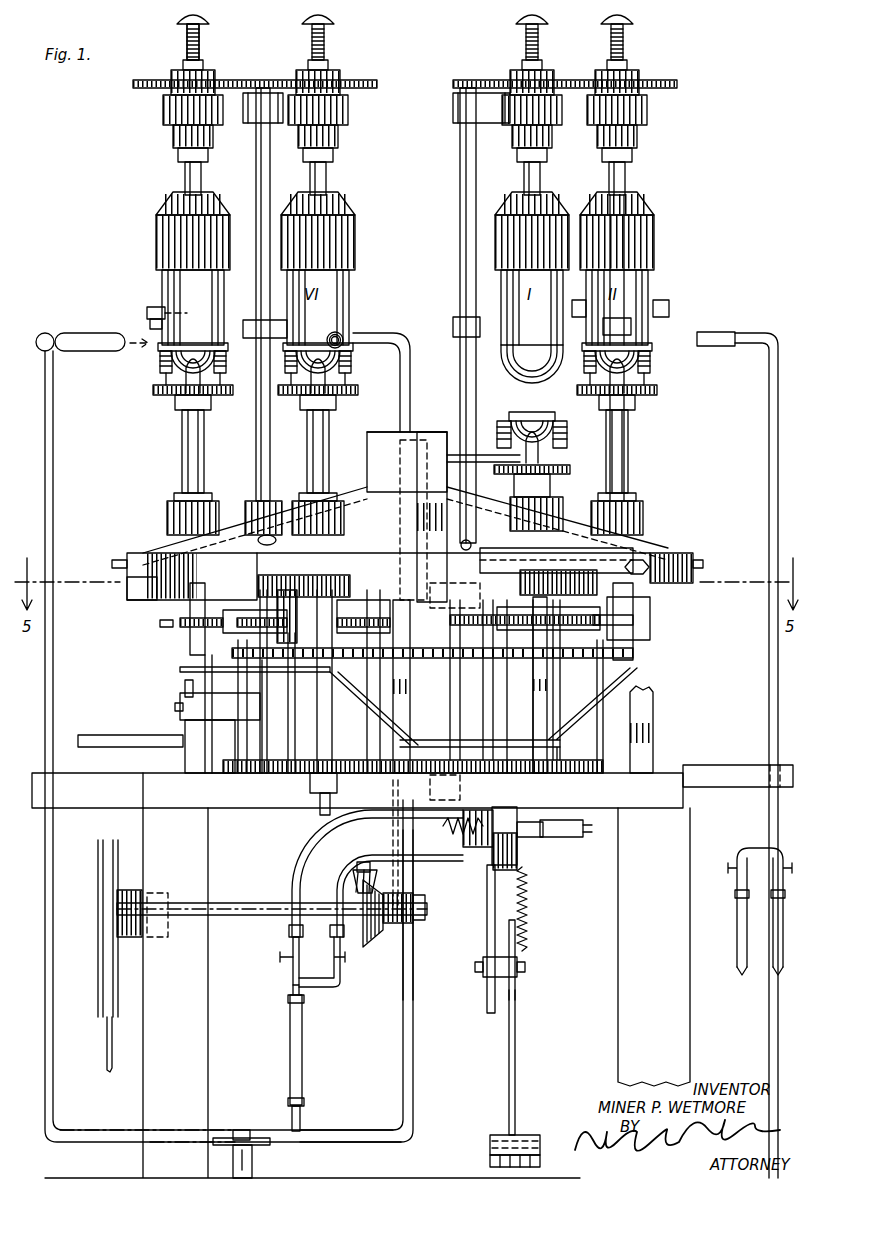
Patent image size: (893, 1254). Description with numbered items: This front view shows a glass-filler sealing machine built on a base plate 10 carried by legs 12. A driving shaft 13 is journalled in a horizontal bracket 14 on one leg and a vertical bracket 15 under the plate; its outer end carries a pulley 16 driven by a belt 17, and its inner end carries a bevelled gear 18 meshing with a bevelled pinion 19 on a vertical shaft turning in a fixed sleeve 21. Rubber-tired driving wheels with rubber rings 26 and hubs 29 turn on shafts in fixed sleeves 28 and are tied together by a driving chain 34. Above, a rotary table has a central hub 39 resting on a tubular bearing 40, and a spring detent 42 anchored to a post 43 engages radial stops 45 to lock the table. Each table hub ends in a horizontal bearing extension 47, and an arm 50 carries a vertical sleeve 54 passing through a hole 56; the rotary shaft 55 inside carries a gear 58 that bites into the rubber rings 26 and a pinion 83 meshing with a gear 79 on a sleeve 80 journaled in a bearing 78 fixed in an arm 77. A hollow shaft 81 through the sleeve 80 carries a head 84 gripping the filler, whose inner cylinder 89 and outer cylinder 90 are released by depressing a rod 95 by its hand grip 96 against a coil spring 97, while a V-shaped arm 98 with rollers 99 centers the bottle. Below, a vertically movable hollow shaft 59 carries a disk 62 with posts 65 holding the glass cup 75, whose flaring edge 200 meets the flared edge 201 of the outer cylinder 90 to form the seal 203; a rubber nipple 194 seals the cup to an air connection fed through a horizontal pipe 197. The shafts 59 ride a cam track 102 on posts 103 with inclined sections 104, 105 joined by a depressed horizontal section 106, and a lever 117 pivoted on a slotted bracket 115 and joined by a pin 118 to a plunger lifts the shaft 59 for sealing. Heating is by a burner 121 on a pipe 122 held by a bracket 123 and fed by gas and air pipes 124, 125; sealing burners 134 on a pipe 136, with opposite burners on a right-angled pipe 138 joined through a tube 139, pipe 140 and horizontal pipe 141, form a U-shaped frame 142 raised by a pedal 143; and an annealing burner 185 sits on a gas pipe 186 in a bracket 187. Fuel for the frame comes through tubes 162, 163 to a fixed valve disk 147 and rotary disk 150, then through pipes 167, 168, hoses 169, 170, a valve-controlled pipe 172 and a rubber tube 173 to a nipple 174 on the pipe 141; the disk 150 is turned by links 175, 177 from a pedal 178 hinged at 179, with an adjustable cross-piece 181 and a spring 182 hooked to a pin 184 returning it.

The base plate 10 is at (205, 810).
The legs 12 is at (208, 860).
The driving shaft 13 is at (240, 918).
The horizontal bracket 14 is at (160, 937).
The vertical bracket 15 is at (402, 885).
The pulley 16 is at (98, 862).
The belt 17 is at (107, 1048).
The bevelled gear 18 is at (370, 947).
The bevelled pinion 19 is at (353, 880).
The fixed sleeve 21 is at (355, 840).
The rubber driving ring 26 is at (240, 625).
The fixed sleeves 28 is at (298, 770).
The hub 29 is at (640, 653).
The driving chain 34 is at (403, 660).
The central hub 39 is at (367, 460).
The tubular bearing 40 is at (440, 773).
The spring detent 42 is at (480, 560).
The post 43 is at (660, 553).
The stops 45 is at (127, 563).
The horizontal bearing extensions 47 is at (170, 530).
The arm 50 is at (167, 515).
The vertical sleeve 54 is at (256, 190).
The rotary shaft 55 is at (480, 595).
The holes 56 is at (258, 540).
The larger gear 58 is at (160, 623).
The hollow shaft 59 is at (182, 453).
The disk 62 is at (153, 393).
The fixed posts 65 is at (165, 380).
The cup-shaped member 75 is at (160, 362).
The arm 77 is at (163, 110).
The bearing 78 is at (173, 137).
The gear 79 is at (133, 84).
The sleeve 80 is at (178, 155).
The hollow shaft 81 is at (185, 178).
The pinion 83 is at (265, 92).
The head 84 is at (156, 228).
The inner cylinder 89 is at (540, 375).
The outer cylinder 90 is at (162, 275).
The rod 95 is at (186, 42).
The hand grip 96 is at (208, 21).
The coil spring 97 is at (200, 45).
The V-shaped arm 98 is at (150, 318).
The rollers 99 is at (258, 320).
The cam track 102 is at (180, 668).
The posts 103 is at (185, 690).
The inclined section 104 is at (400, 773).
The inclined section 105 is at (603, 712).
The horizontal section 106 is at (540, 775).
The slotted bracket 115 is at (185, 755).
The lever 117 is at (248, 770).
The pin 118 is at (175, 707).
The burner 121 is at (715, 333).
The fuel pipe 122 is at (769, 745).
The bracket 123 is at (718, 788).
The gas pipe 124 is at (742, 968).
The air pipe 125 is at (776, 968).
The sealing burners 134 is at (86, 334).
The pipe 136 is at (50, 432).
The right-angled pipe 138 is at (413, 392).
The tube 139 is at (420, 425).
The pipe 140 is at (405, 1030).
The horizontal pipe 141 is at (350, 1135).
The U-shaped burner frame 142 is at (62, 1135).
The pedal 143 is at (240, 1130).
The fixed disk 147 is at (517, 815).
The rotary disk 150 is at (492, 860).
The rubber tube 162 is at (583, 828).
The rubber tube 163 is at (580, 838).
The pipe 167 is at (478, 808).
The pipe 168 is at (495, 847).
The rubber hose 169 is at (290, 895).
The rubber hose 170 is at (293, 932).
The valve-controlled pipe 172 is at (312, 985).
The rubber tube 173 is at (302, 1057).
The nipple 174 is at (300, 1108).
The link 175 is at (487, 952).
The second link 177 is at (515, 1050).
The pedal 178 is at (520, 1135).
The hinge 179 is at (490, 1163).
The adjustable cross-piece 181 is at (515, 982).
The contracting coil spring 182 is at (527, 937).
The pin 184 is at (525, 965).
The burner 185 is at (342, 336).
The gas pipe 186 is at (296, 850).
The bracket 187 is at (337, 780).
The rubber nipple 194 is at (188, 380).
The horizontal pipe 197 is at (92, 735).
The flaring edge 200 is at (510, 415).
The flared edge 201 is at (478, 337).
The finished seal 203 is at (160, 340).